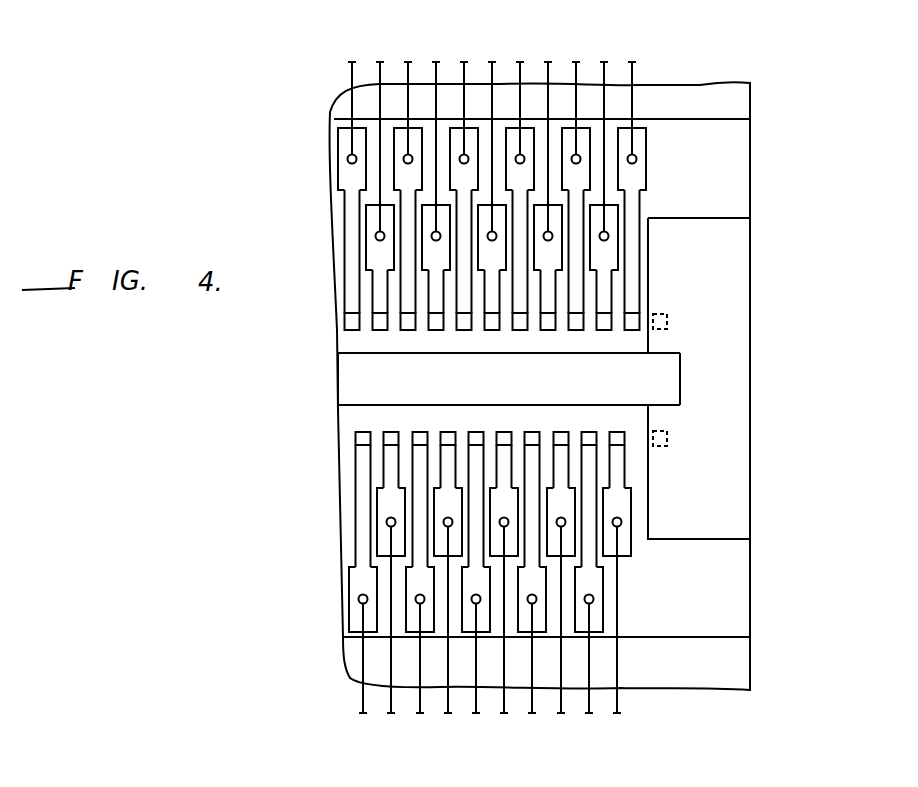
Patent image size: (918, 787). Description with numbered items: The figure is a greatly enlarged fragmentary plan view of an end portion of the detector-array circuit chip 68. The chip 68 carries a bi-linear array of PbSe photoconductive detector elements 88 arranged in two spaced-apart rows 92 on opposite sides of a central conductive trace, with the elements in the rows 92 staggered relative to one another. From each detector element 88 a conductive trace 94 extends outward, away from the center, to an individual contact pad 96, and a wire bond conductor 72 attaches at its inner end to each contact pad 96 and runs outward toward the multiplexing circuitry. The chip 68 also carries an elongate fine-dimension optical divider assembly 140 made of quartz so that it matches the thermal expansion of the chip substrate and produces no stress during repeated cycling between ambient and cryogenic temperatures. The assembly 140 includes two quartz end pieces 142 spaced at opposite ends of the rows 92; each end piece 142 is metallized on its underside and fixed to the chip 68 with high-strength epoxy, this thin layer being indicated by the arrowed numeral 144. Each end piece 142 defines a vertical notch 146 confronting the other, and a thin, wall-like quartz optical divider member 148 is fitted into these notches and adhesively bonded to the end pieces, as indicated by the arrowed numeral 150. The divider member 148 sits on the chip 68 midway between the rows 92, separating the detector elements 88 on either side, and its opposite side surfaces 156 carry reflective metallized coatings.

The detector-array circuit chip 68 is at (753, 598).
The wire bond conductors 72 is at (463, 62).
The detector elements 88 is at (375, 318).
The rows 92 is at (338, 324).
The conductive traces 94 is at (378, 275).
The contact pads 96 is at (398, 126).
The optical divider assembly 140 is at (477, 371).
The end pieces 142 is at (738, 350).
The metallization and adhesive 144 is at (716, 220).
The vertical notch 146 is at (678, 373).
The optical divider member 148 is at (340, 370).
The adhesive bond 150 is at (663, 355).
The side surfaces 156 is at (340, 352).